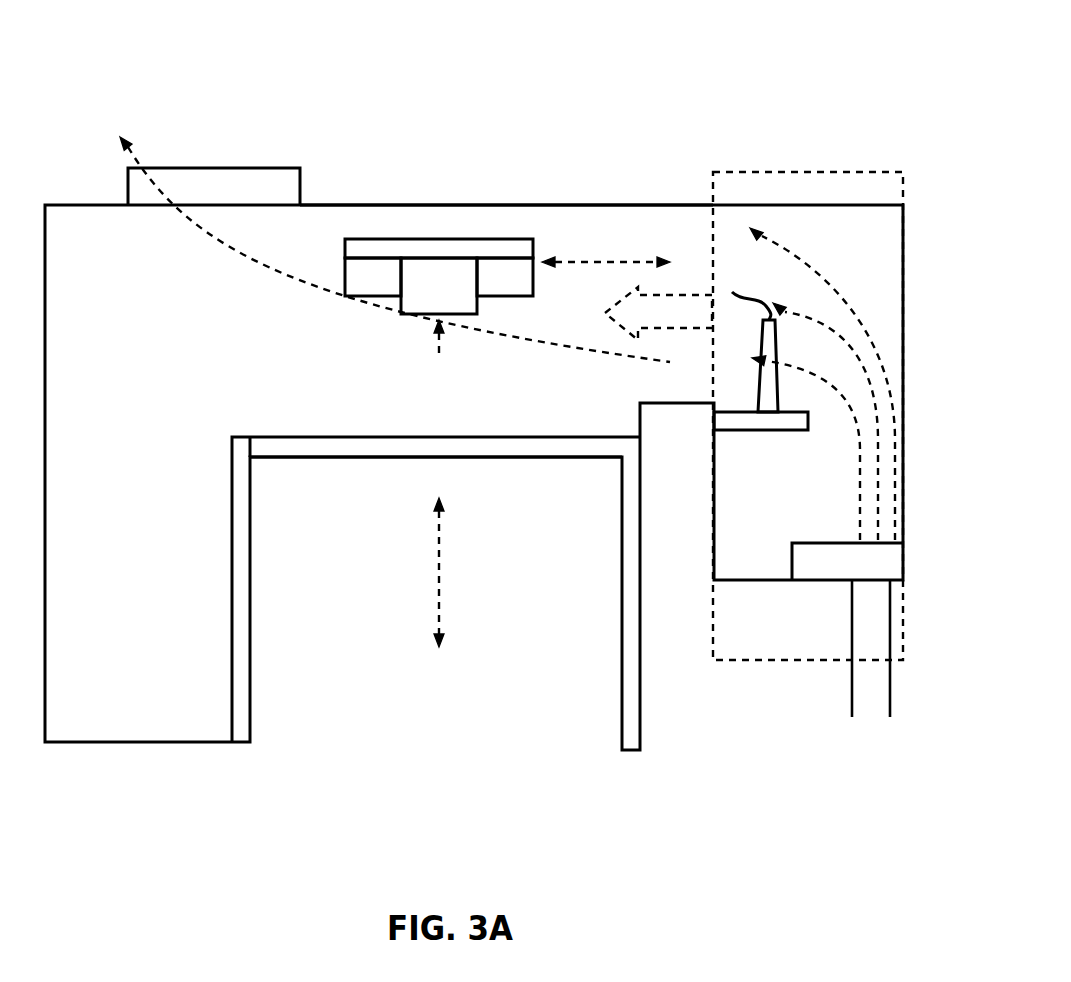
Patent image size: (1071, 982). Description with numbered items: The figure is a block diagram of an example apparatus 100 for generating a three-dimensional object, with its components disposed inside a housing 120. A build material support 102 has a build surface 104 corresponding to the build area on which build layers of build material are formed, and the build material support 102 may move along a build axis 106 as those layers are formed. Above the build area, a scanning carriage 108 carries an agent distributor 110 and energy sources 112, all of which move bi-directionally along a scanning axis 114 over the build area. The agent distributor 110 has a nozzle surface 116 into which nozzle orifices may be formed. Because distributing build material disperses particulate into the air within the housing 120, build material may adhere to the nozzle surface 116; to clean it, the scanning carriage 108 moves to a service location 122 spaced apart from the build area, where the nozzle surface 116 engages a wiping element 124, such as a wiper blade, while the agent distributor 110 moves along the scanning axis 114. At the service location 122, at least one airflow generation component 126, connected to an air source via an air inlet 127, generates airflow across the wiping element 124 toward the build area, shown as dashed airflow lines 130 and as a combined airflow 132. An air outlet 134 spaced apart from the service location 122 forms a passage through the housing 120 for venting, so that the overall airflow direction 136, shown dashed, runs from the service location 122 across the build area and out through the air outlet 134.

The apparatus 100 is at (770, 69).
The build material support 102 is at (533, 458).
The build surface 104 is at (294, 420).
The build axis 106 is at (411, 572).
The scanning carriage 108 is at (440, 238).
The agent distributor 110 is at (419, 304).
The energy sources 112 is at (439, 277).
The scanning axis 114 is at (606, 250).
The nozzle surface 116 is at (437, 353).
The housing 120 is at (570, 203).
The service location 122 is at (833, 172).
The wiping element 124 is at (761, 343).
The airflow generation component 126 is at (806, 577).
The air inlet 127 is at (852, 640).
The airflow lines 130 is at (822, 384).
The combined airflow 132 is at (658, 313).
The air outlet 134 is at (235, 165).
The airflow direction 136 is at (395, 234).